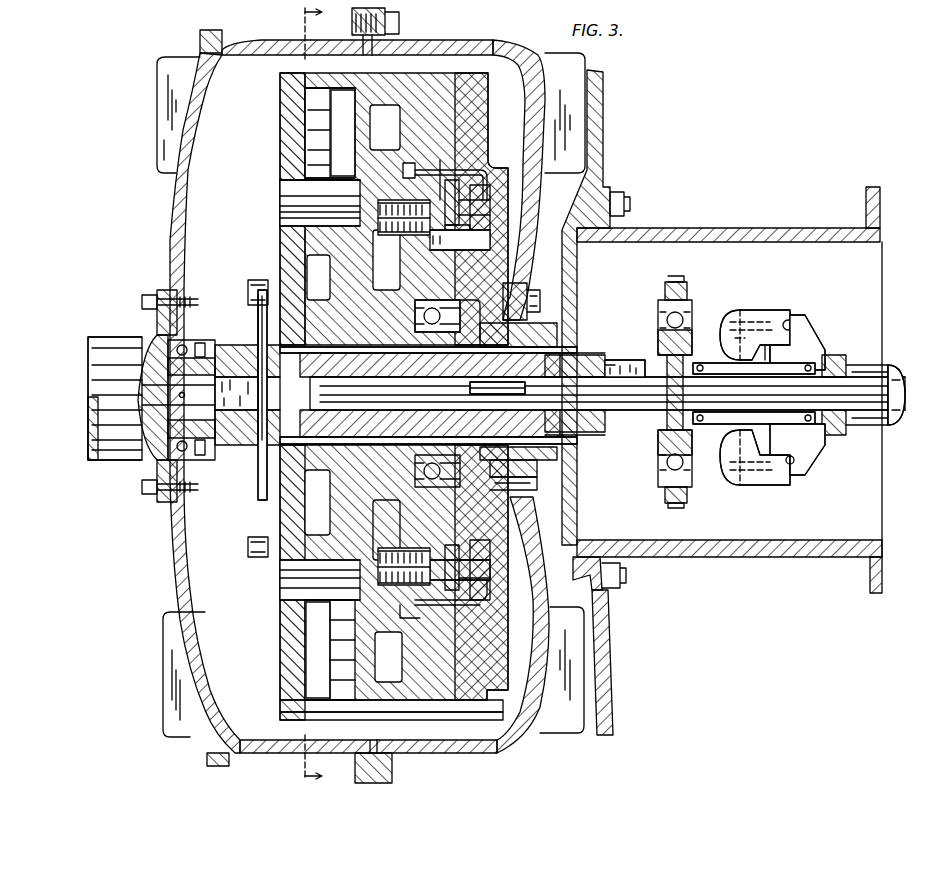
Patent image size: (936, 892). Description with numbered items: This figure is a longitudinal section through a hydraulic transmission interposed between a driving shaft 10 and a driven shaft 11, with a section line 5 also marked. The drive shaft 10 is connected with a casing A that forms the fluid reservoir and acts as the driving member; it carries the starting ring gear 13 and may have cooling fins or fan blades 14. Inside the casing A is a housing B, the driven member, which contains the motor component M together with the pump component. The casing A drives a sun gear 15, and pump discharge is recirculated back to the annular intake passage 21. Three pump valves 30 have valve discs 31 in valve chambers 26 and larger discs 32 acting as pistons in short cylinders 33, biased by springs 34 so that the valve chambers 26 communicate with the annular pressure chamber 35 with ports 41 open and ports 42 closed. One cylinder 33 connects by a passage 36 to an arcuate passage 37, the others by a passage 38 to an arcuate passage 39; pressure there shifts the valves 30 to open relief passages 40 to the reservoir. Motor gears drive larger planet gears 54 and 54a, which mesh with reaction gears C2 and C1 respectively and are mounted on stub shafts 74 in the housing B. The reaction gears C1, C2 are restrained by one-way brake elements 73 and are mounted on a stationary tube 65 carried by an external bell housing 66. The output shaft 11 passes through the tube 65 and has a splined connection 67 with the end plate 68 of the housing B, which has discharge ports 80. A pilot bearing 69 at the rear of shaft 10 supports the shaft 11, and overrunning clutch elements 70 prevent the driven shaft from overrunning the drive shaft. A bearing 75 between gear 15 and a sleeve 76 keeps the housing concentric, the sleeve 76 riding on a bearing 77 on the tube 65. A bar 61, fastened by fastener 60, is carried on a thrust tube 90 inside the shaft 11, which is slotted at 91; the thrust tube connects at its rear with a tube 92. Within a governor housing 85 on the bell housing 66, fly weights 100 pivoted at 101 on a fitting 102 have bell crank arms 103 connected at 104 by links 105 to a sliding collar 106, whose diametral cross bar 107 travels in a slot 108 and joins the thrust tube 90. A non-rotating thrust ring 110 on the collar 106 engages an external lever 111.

The casing A is at (170, 205).
The housing B is at (433, 70).
The section line 5- 5 is at (306, 401).
The driving shaft 10 is at (92, 340).
The driven shaft 11 is at (592, 435).
The starting ring gear 13 is at (200, 36).
The cooling fins or fan blades 14 is at (157, 70).
The driving sun gear 15 is at (528, 283).
The annular passage 21 is at (386, 110).
The valve chambers 26 is at (418, 243).
The pump valves 30 is at (490, 238).
The valve discs 31 is at (444, 205).
The larger disc 32 is at (482, 215).
The short cylinder 33 is at (475, 200).
The springs 34 is at (412, 204).
The annular pump discharge or pressure chamber 35 is at (372, 272).
The passage 36 is at (445, 185).
The arcuate passage 37 is at (410, 160).
The passage 38 is at (470, 622).
The arcuate passage 39 is at (412, 622).
The relief passages 40 is at (455, 170).
The ports 41 is at (457, 237).
The ports 42 is at (405, 180).
The larger gear 54 is at (308, 625).
The larger gear 54a is at (330, 136).
The plate bolt 60 is at (272, 557).
The bar 61 is at (258, 490).
The stationary tube 65 is at (388, 437).
The external bell housing 66 is at (604, 162).
The splined connection 67 is at (280, 365).
The end plate 68 is at (282, 148).
The pilot bearing 69 is at (178, 430).
The overrunning clutch elements 70 is at (220, 350).
The one-way brake elements 73 is at (360, 348).
The stub shafts 74 is at (310, 192).
The bearing 75 is at (455, 300).
The sleeve 76 is at (470, 320).
The bearing 77 is at (430, 358).
The discharge ports 80 is at (300, 265).
The governor housing 85 is at (760, 222).
The thrust tube 90 is at (592, 353).
The slot 91 is at (242, 446).
The tube 92 is at (835, 362).
The fly weights 100 is at (736, 310).
The pivot 101 is at (788, 318).
The fitting 102 is at (818, 315).
The bell crank arms 103 is at (812, 470).
The pivot connection 104 is at (810, 425).
The links 105 is at (762, 455).
The sliding collar 106 is at (655, 340).
The diametral cross bar 107 is at (665, 425).
The slot 108 is at (620, 358).
The non-rotating thrust ring 110 is at (658, 480).
The external lever 111 is at (688, 497).
The reaction gear C1 is at (280, 285).
The reaction gear C2 is at (300, 318).
The motor component M is at (300, 660).